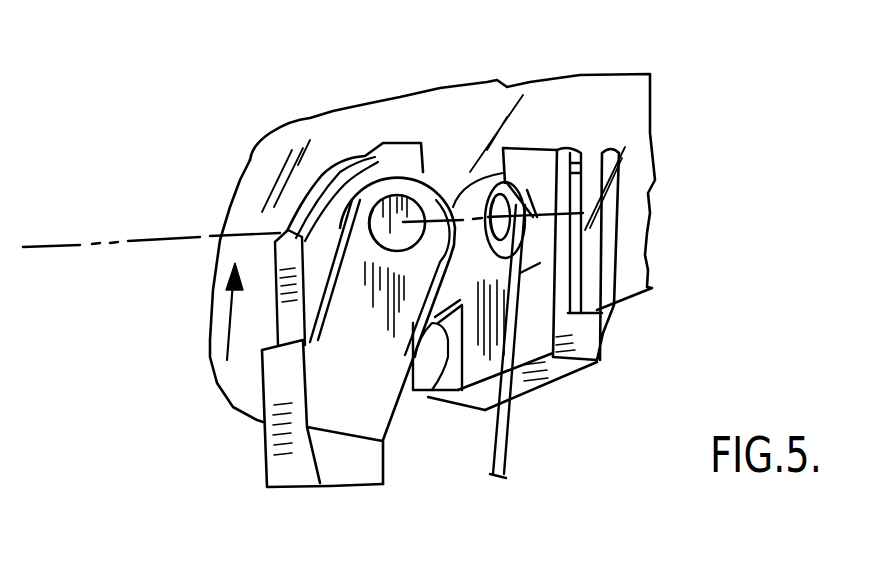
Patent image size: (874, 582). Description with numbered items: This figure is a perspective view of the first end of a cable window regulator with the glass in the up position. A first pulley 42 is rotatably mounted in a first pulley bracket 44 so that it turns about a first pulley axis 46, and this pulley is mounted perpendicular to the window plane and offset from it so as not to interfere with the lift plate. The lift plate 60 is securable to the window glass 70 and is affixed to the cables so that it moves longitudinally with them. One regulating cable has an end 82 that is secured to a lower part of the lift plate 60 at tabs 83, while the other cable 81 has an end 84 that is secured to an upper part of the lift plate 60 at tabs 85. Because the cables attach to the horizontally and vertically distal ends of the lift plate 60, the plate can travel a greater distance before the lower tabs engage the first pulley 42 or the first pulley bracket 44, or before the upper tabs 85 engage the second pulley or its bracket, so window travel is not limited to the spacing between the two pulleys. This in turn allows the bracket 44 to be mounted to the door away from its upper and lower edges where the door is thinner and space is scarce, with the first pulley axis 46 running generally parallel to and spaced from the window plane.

The first pulley 42 is at (357, 160).
The first pulley bracket 44 is at (375, 347).
The first pulley axis 46 is at (70, 244).
The lift plate 60 is at (603, 334).
The window glass 70 is at (475, 128).
The cable 81 is at (513, 430).
The cable end 82 is at (430, 400).
The tabs 83 is at (428, 398).
The cable end 84 is at (522, 272).
The tabs 85 is at (537, 160).